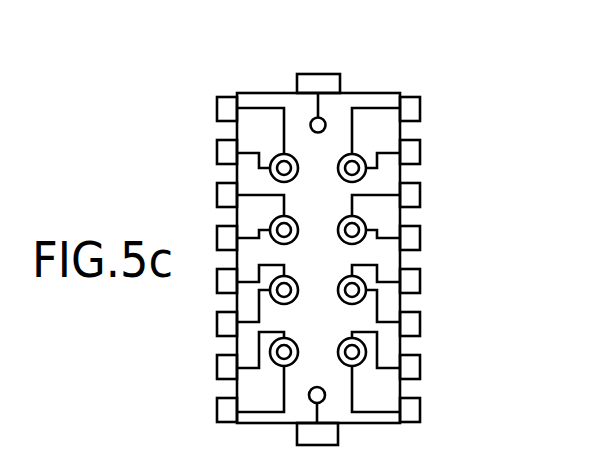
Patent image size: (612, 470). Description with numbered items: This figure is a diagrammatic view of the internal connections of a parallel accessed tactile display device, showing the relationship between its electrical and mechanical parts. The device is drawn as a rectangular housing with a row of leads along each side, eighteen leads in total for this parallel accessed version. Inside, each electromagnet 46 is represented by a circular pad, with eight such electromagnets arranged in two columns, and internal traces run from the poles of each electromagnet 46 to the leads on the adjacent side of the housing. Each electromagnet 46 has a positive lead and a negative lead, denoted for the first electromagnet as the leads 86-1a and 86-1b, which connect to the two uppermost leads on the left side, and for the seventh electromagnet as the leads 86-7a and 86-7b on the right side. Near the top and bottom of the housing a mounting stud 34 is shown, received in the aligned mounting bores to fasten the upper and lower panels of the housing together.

The mounting stud 34 is at (326, 121).
The electromagnet 46 is at (368, 222).
The lead 86-1a is at (226, 108).
The lead 86-1b is at (223, 153).
The lead 86-7a is at (412, 288).
The lead 86-7b is at (412, 328).